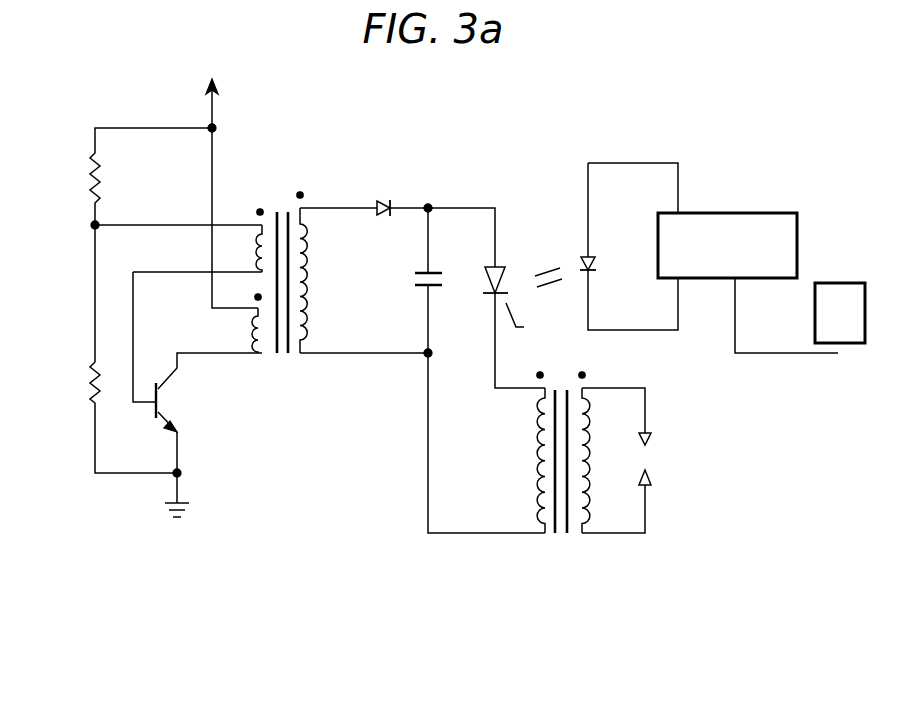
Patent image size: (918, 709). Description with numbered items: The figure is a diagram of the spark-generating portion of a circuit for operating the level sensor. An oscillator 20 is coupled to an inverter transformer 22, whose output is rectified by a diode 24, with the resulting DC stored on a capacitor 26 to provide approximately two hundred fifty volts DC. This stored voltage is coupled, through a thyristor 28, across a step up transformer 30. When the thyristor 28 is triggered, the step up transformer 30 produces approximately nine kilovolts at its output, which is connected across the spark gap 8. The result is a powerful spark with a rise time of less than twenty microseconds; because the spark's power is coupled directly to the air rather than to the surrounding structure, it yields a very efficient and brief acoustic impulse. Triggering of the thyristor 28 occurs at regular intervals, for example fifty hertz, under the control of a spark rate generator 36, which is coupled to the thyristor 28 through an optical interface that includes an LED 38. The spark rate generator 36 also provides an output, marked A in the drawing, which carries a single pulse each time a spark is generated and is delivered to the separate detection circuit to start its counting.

The oscillator 20 is at (91, 279).
The inverter transformer 22 is at (289, 184).
The diode 24 is at (378, 200).
The capacitor 26 is at (411, 278).
The thyristor 28 is at (506, 266).
The step up transformer 30 is at (563, 540).
The spark rate generator 36 is at (750, 222).
The LED 38 is at (600, 256).
The spark gap 8 is at (650, 458).